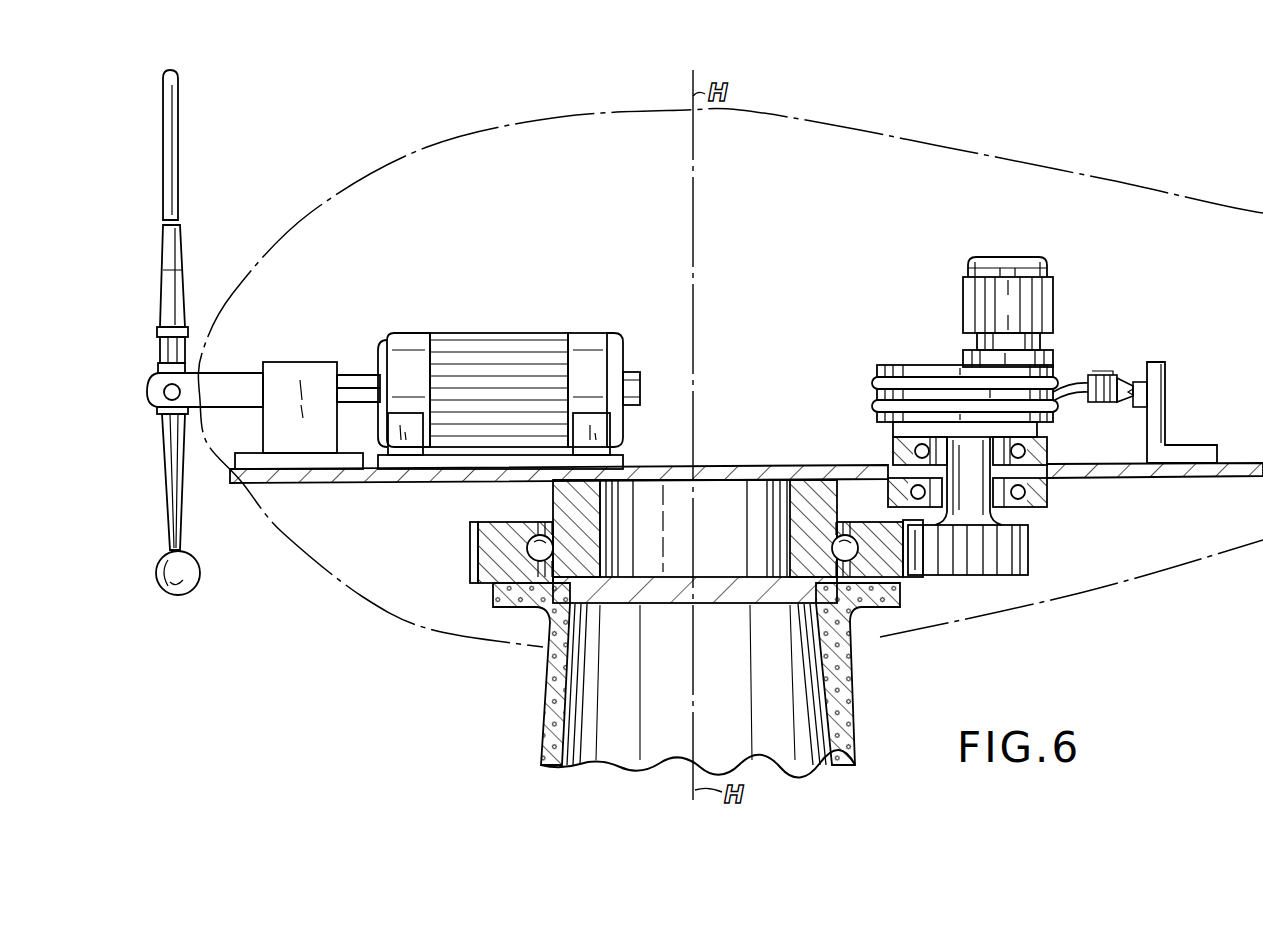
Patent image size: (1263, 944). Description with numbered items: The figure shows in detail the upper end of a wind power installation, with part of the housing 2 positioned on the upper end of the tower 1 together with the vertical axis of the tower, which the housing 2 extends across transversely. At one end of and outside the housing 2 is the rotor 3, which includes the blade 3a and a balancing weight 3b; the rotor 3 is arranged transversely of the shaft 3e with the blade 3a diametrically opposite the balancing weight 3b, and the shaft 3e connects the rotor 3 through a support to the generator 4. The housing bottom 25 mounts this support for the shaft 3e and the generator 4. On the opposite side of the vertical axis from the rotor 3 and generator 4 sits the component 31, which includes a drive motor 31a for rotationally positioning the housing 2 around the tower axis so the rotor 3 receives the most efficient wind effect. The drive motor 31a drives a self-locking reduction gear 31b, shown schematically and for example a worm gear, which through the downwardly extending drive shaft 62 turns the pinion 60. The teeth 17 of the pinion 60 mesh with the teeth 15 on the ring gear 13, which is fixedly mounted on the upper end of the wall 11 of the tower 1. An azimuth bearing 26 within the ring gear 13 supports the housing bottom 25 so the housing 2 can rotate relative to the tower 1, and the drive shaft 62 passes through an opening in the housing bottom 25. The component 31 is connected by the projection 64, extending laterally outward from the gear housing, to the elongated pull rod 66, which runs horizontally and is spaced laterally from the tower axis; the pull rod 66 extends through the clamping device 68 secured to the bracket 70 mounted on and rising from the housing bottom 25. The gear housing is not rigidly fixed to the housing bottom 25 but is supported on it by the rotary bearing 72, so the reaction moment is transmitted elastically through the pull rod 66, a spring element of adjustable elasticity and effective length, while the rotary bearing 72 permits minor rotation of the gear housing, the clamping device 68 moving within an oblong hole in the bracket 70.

The tower 1 is at (690, 680).
The housing 2 is at (425, 631).
The rotor 3 is at (263, 353).
The blade 3a is at (178, 131).
The balancing weight 3b is at (186, 594).
The shaft 3e is at (236, 386).
The generator 4 is at (414, 340).
The wall 11 is at (852, 713).
The ring gear 13 is at (673, 541).
The teeth 15 is at (477, 550).
The teeth 17 is at (1014, 556).
The housing bottom 25 is at (1228, 478).
The azimuth bearing 26 is at (560, 509).
The component 31 is at (947, 327).
The drive motor 31a is at (990, 270).
The self-locking reduction gear 31b is at (915, 378).
The pinion 60 is at (960, 542).
The drive shaft 62 is at (992, 505).
The projection 64 is at (1092, 376).
The pull rod 66 is at (1092, 402).
The clamping device 68 is at (1133, 385).
The bracket 70 is at (1166, 414).
The rotary bearing 72 is at (890, 456).